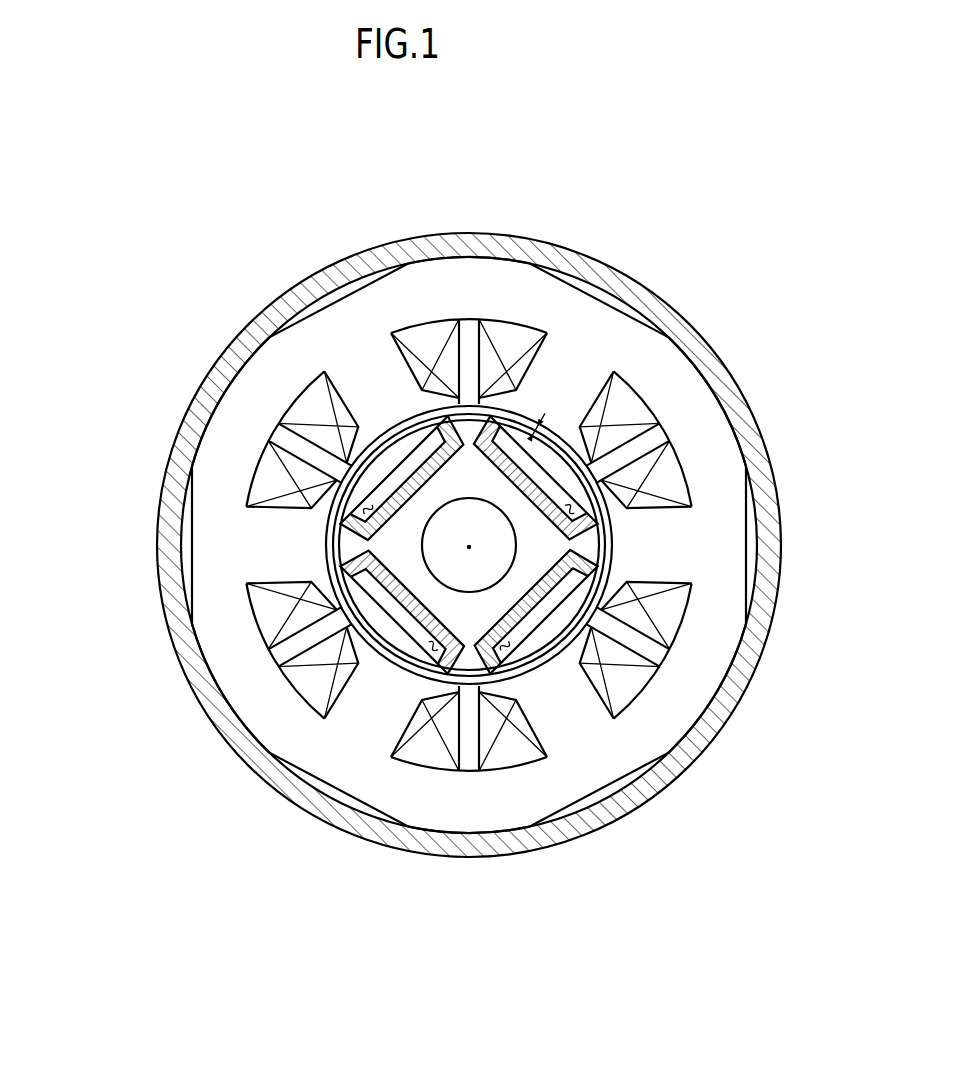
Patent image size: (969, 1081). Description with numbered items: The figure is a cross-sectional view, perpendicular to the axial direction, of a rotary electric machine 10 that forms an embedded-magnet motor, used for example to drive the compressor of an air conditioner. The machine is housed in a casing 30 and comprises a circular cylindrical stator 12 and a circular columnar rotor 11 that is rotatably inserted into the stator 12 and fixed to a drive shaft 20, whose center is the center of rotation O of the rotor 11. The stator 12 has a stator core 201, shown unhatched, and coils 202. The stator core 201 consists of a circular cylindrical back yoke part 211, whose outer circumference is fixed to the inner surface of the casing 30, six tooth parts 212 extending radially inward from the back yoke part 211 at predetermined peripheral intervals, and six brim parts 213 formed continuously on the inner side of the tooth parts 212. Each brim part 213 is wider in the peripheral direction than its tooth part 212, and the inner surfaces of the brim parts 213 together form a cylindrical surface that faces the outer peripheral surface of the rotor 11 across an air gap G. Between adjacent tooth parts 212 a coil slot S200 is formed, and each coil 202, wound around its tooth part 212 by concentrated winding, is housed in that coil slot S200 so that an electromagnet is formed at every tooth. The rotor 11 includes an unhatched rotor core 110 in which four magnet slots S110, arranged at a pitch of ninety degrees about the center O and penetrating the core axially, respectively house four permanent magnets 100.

The rotary electric machine 10 is at (278, 240).
The casing 30 is at (620, 256).
The stator 12 is at (316, 786).
The stator core 201 is at (76, 447).
The back yoke part 211 is at (215, 497).
The tooth part 212 is at (280, 543).
The brim part 213 is at (250, 463).
The coil slot S200 is at (305, 680).
The coil 202 is at (310, 690).
The permanent magnet 100 is at (330, 428).
The rotor 11 is at (386, 437).
The rotor core 110 is at (406, 447).
The magnet slot S110 is at (405, 498).
The drive shaft 20 is at (497, 552).
The center of rotation O is at (469, 546).
The air gap G is at (541, 422).